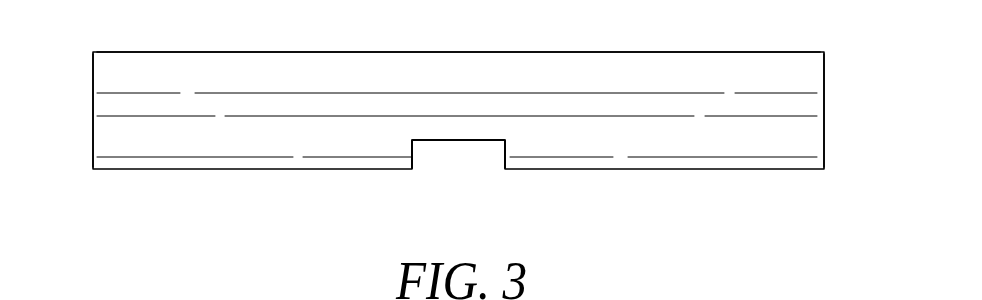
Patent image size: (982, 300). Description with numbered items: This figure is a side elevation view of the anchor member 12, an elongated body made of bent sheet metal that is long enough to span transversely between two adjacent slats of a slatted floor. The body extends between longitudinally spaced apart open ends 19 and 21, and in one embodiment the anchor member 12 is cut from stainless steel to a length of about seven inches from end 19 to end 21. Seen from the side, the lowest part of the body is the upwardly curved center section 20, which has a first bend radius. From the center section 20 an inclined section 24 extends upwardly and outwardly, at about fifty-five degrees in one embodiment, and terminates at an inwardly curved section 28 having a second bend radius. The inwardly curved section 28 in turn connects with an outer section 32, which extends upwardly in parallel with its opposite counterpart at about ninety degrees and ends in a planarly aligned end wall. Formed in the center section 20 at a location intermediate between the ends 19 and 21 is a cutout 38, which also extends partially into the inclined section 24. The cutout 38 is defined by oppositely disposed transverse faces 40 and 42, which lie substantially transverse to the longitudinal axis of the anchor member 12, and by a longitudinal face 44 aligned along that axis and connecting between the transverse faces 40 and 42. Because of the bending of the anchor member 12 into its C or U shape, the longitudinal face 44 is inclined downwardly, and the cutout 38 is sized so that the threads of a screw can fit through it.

The anchor member 12 is at (840, 183).
The open end 19 is at (93, 132).
The center section 20 is at (312, 162).
The open end 21 is at (824, 131).
The inclined section 24 is at (158, 136).
The inwardly curved section 28 is at (172, 105).
The outer section 32 is at (702, 72).
The cutout 38 is at (468, 152).
The transverse face 40 is at (413, 161).
The transverse face 42 is at (505, 161).
The longitudinal face 44 is at (463, 141).